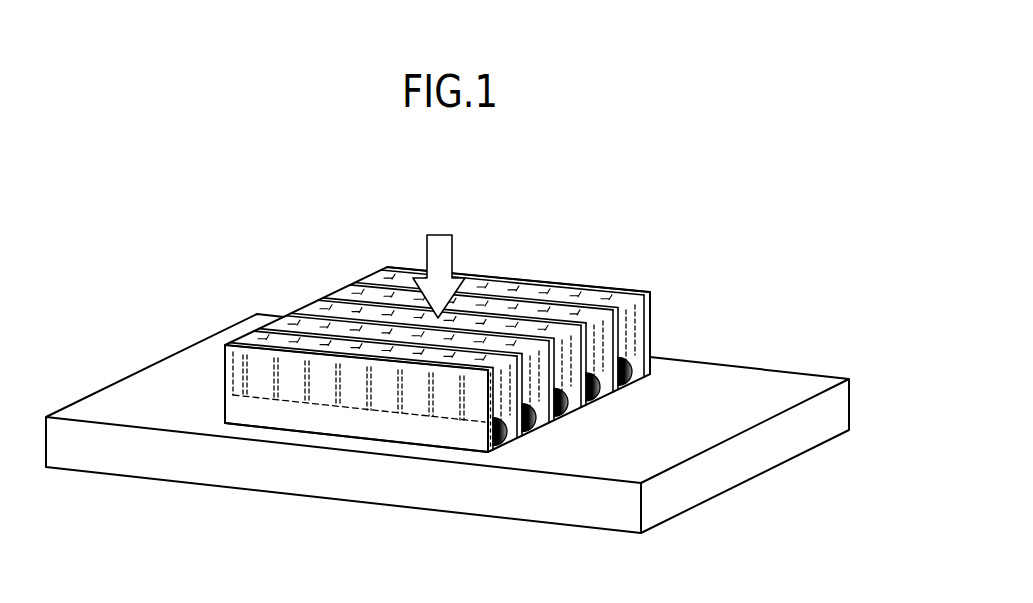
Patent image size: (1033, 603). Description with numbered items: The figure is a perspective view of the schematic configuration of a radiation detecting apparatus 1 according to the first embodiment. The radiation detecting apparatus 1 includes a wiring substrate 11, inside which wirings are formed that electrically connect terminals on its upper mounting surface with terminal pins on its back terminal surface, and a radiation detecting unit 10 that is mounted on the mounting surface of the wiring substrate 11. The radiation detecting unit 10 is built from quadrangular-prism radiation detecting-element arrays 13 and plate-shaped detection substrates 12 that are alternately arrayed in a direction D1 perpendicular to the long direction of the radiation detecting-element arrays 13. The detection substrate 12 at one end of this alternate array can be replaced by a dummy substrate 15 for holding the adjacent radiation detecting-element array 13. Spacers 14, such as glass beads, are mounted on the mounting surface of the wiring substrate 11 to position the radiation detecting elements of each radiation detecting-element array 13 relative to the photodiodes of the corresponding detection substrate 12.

The radiation detecting apparatus 1 is at (177, 209).
The radiation detecting unit 10 is at (467, 352).
The wiring substrate 11 is at (748, 482).
The detection substrate 12 is at (616, 307).
The radiation detecting-element array 13 is at (627, 295).
The spacer 14 is at (507, 446).
The dummy substrate 15 is at (432, 448).
The stacking direction D1 is at (439, 233).